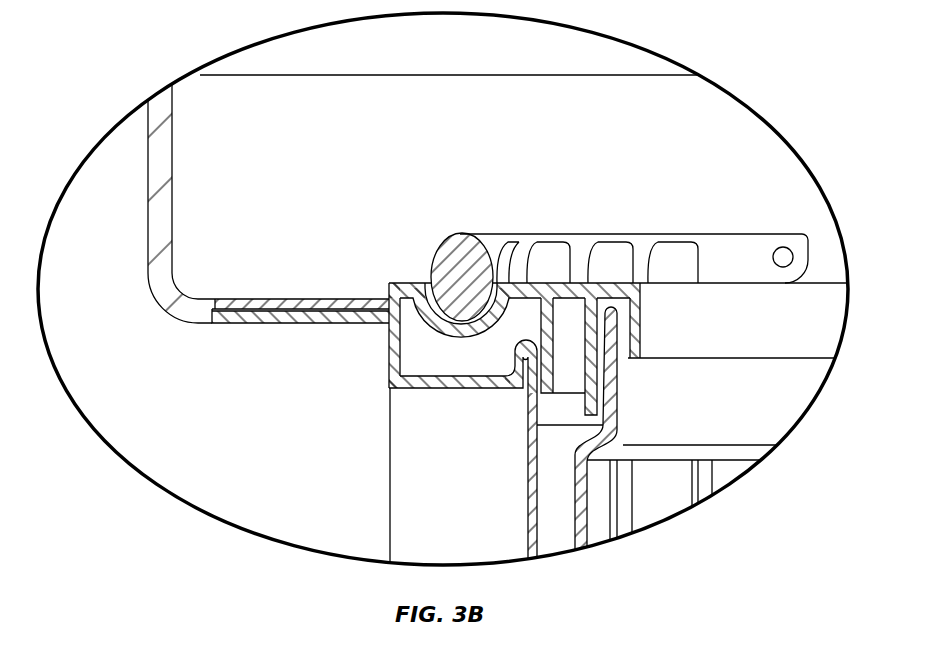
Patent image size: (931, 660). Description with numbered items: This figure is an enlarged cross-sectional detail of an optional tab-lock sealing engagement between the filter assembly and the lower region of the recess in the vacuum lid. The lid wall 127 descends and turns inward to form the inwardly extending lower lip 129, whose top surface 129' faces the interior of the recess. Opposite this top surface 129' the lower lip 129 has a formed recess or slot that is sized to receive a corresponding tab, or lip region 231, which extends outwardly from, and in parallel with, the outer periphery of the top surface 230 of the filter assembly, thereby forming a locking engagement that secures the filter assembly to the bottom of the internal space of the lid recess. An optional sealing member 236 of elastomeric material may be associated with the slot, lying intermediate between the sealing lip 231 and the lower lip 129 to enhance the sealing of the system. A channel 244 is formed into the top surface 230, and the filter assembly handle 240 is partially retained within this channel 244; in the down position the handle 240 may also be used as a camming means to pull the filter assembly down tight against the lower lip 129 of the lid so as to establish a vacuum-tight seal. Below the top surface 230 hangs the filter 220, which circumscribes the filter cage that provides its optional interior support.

The container wall 127 is at (147, 230).
The inwardly extending lower lip 129 is at (167, 315).
The top surface of lower lip 129' is at (293, 275).
The tab or lip region 231 is at (305, 325).
The sealing member 236 is at (312, 298).
The top surface of filter assembly 230 is at (391, 282).
The channel 244 is at (437, 272).
The filter assembly handle 240 is at (537, 233).
The filter 220 is at (412, 475).